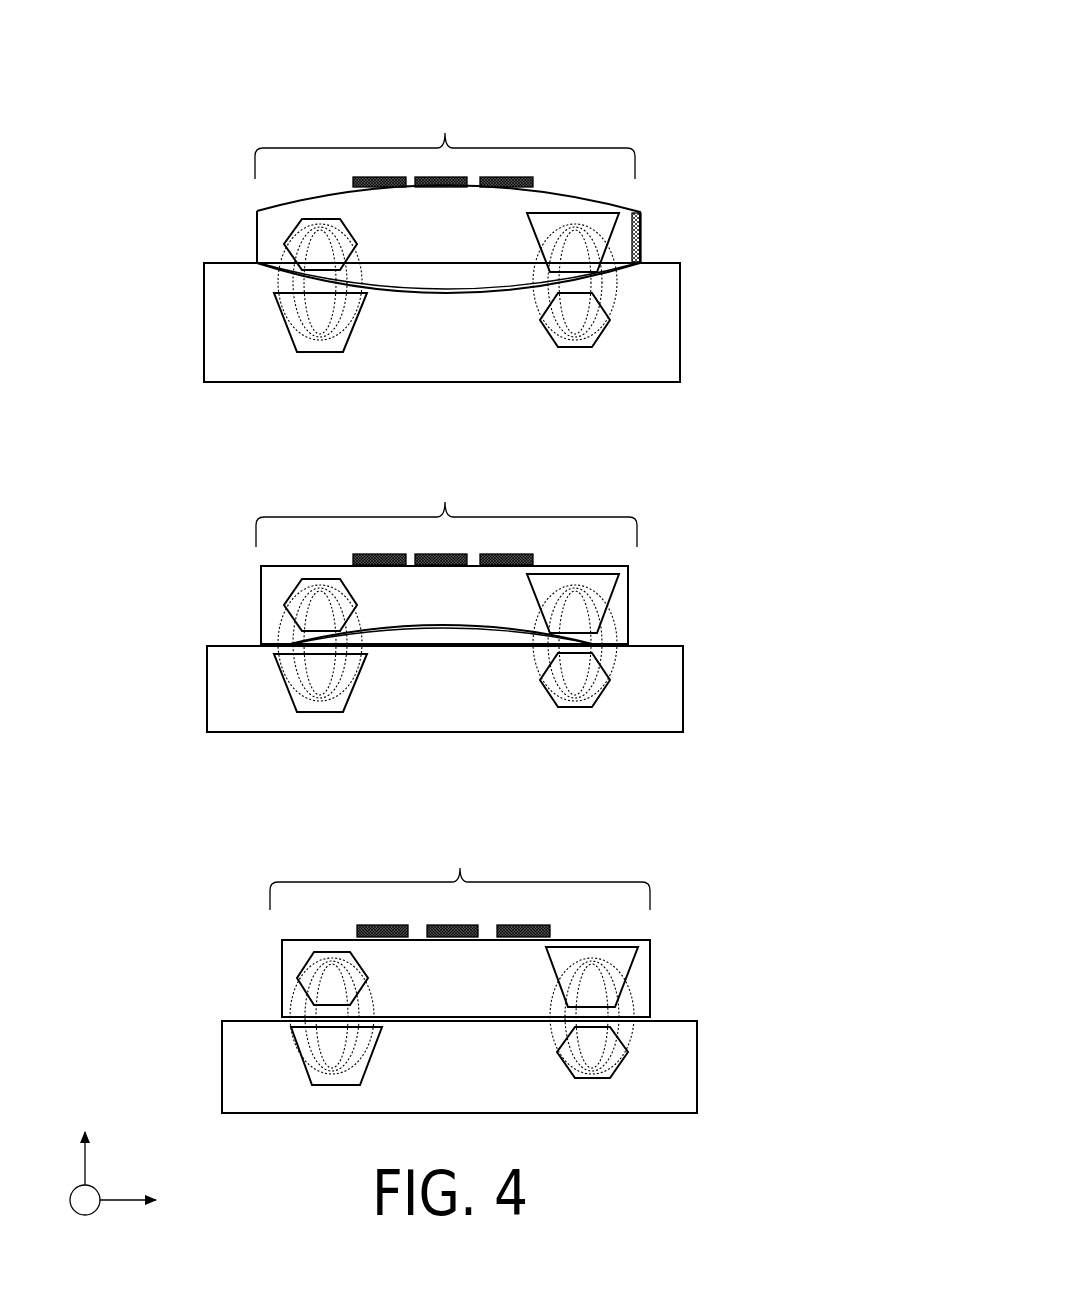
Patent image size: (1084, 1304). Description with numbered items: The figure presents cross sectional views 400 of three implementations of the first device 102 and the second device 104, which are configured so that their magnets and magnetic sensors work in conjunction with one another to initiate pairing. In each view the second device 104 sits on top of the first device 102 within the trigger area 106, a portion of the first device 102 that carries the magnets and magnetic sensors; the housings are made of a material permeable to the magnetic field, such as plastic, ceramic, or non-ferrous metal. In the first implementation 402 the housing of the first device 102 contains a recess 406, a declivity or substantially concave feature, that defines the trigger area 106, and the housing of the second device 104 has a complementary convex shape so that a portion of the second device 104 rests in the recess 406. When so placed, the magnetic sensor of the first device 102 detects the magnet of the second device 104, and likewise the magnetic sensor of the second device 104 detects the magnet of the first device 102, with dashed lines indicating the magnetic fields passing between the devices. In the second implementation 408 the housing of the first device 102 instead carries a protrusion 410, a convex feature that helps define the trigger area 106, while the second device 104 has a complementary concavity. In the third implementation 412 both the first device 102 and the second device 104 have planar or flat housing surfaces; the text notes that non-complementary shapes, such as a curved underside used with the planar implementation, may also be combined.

The cross sectional views 400 is at (731, 58).
The first implementation 402 is at (231, 114).
The recess 406 is at (254, 259).
The second implementation 408 is at (233, 517).
The protrusion 410 is at (392, 636).
The third implementation 412 is at (242, 862).
The first device 102 is at (518, 688).
The second device 104 is at (539, 571).
The trigger area 106 is at (452, 509).